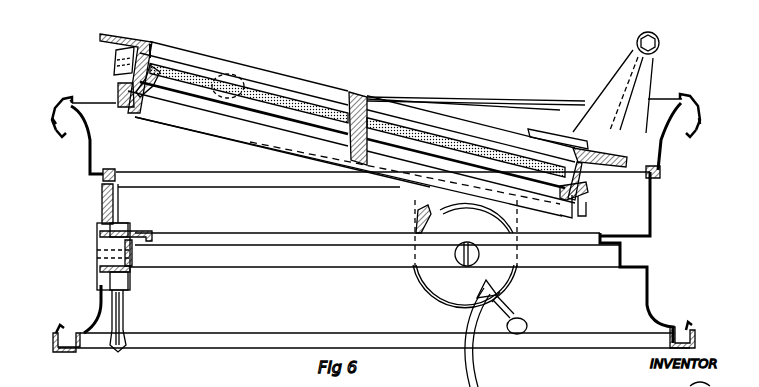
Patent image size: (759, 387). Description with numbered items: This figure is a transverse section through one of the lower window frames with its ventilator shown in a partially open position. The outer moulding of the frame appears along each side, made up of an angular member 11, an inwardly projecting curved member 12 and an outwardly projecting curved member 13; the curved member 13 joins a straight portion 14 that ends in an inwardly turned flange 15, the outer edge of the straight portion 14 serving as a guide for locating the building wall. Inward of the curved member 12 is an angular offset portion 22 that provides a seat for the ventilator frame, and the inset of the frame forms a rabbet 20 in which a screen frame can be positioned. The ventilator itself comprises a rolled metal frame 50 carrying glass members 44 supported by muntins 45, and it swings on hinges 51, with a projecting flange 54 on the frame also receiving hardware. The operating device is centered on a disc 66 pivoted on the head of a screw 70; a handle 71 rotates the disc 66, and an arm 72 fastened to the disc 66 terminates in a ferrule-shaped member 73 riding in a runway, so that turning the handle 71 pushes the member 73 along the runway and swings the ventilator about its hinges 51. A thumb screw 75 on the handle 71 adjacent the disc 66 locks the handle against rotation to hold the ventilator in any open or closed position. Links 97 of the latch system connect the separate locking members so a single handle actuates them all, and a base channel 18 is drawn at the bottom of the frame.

The lever 11 is at (70, 100).
The curved side wall 12 is at (88, 138).
The hook flange 13 is at (60, 106).
The flange 14 is at (52, 121).
The lip 15 is at (58, 135).
The base channel 18 is at (54, 343).
The shelf bracket 20 is at (132, 267).
The hook flange 22 is at (112, 176).
The screen 44 is at (290, 118).
The divider rib 45 is at (361, 98).
The clamp 50 is at (150, 70).
The handle ring 51 is at (657, 34).
The clamp hook 54 is at (120, 42).
The wheel 66 is at (503, 264).
The shaft 70 is at (458, 256).
The arrow 71 is at (476, 365).
The tray bottom 72 is at (403, 182).
The screen frame 73 is at (232, 72).
The handle knob 75 is at (526, 323).
The side wall 97 is at (103, 197).